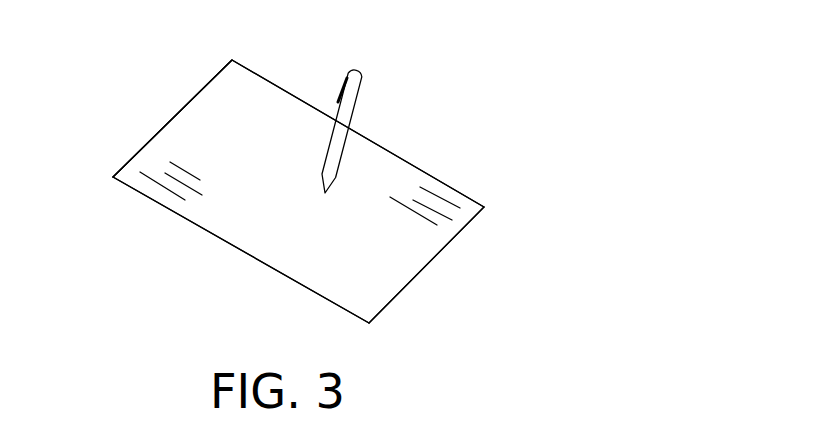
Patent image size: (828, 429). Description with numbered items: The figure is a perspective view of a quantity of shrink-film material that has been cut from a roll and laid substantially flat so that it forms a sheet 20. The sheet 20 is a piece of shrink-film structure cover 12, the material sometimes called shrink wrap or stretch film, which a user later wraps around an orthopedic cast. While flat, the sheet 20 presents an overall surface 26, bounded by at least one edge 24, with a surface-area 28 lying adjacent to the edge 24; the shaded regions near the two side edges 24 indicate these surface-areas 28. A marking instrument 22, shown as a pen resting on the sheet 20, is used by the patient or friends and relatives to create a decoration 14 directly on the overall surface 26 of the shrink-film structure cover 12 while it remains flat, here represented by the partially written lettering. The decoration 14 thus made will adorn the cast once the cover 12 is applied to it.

The shrink-film structure cover 12 is at (337, 242).
The decoration 14 is at (273, 183).
The sheet 20 is at (232, 123).
The marking instrument 22 is at (358, 108).
The edge 24 is at (127, 163).
The overall surface 26 is at (222, 188).
The surface-area 28 is at (176, 128).